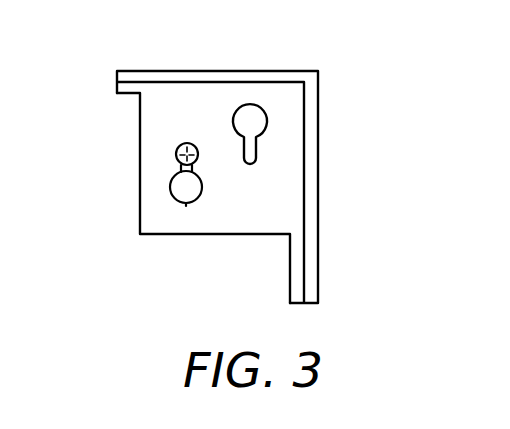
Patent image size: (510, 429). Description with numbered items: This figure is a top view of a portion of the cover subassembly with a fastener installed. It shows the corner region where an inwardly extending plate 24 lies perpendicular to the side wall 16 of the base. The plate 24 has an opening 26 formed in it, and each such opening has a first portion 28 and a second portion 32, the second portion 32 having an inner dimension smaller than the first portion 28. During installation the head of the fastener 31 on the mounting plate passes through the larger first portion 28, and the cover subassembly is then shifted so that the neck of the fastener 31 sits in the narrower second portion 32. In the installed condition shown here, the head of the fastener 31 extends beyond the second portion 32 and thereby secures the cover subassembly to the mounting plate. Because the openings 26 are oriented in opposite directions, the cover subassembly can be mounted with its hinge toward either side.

The side wall 16 is at (210, 71).
The plate 24 is at (213, 234).
The opening 26 is at (170, 197).
The first portion 28 is at (186, 205).
The fastener 31 is at (177, 148).
The second portion 32 is at (176, 162).